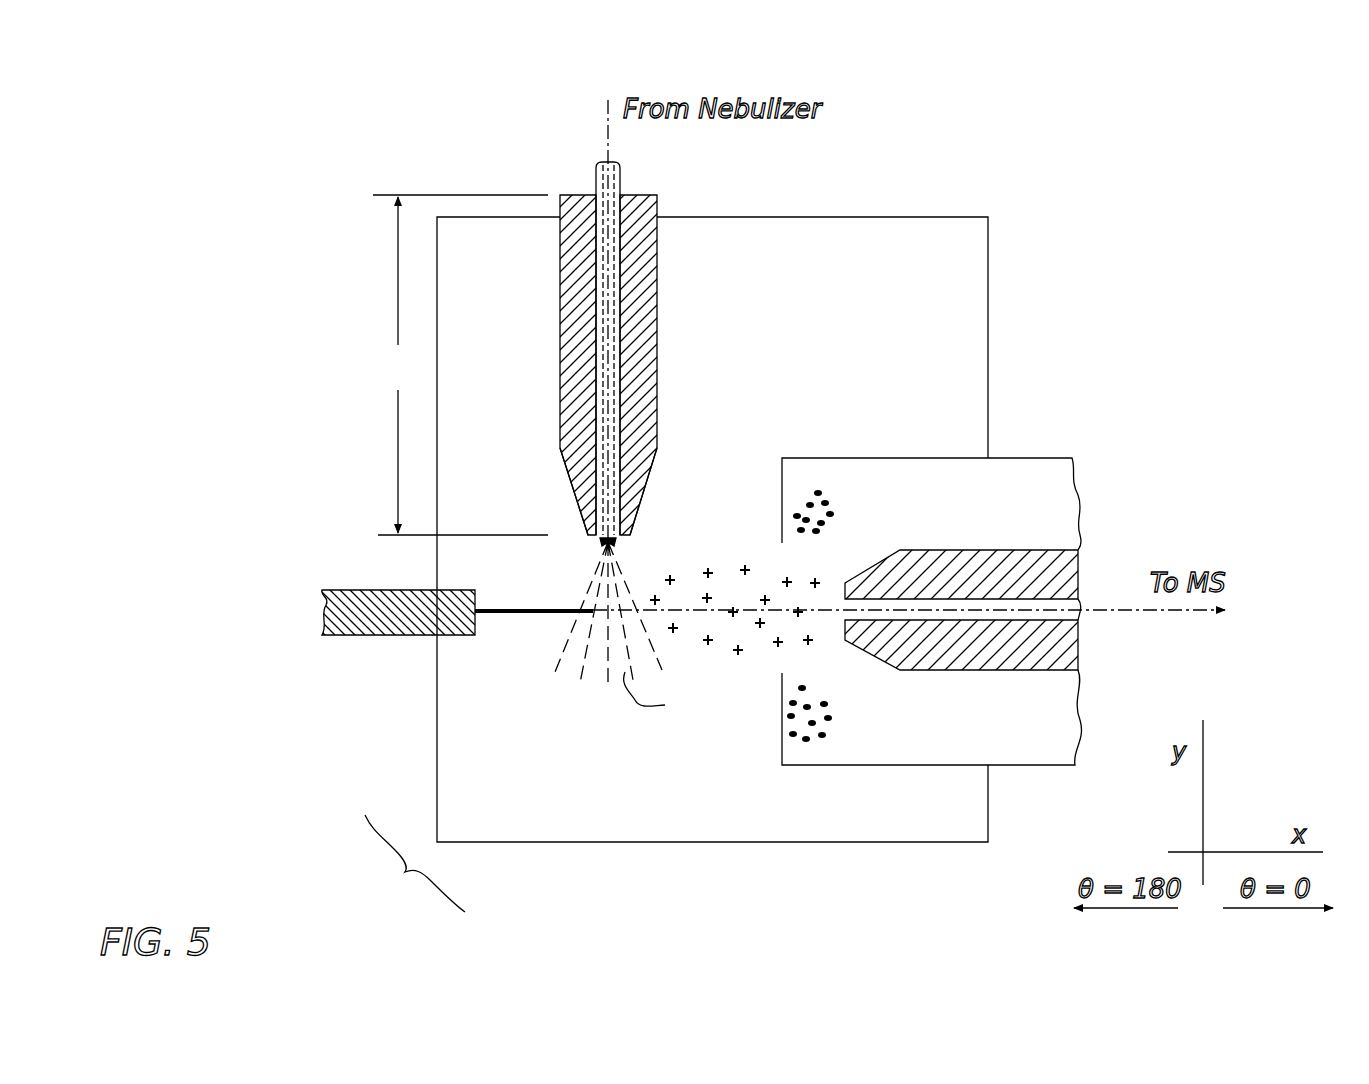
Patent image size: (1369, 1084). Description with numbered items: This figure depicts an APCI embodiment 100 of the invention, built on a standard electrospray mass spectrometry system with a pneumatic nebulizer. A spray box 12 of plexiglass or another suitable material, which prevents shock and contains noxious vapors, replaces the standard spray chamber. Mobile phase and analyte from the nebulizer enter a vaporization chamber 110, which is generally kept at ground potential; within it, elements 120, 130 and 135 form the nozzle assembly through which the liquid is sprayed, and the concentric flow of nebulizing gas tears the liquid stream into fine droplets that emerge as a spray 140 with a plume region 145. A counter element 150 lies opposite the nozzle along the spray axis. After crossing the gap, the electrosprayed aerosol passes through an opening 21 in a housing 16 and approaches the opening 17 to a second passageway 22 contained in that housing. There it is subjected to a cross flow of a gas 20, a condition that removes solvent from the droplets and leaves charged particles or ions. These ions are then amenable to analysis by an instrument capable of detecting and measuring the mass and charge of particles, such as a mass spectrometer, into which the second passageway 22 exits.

The APCI embodiment 100 is at (408, 869).
The spray box 12 is at (441, 838).
The housing 16 is at (825, 457).
The opening 17 is at (845, 607).
The gas 20 is at (853, 492).
The opening 21 is at (778, 668).
The second passageway 22 is at (1040, 611).
The vaporization chamber 110 is at (460, 365).
The capillary tube 120 is at (625, 188).
The nozzle body 130 is at (580, 337).
The tapered nozzle tip 135 is at (586, 490).
The spray 140 is at (587, 580).
The spray plume 145 is at (637, 705).
The counter electrode wire 150 is at (528, 623).